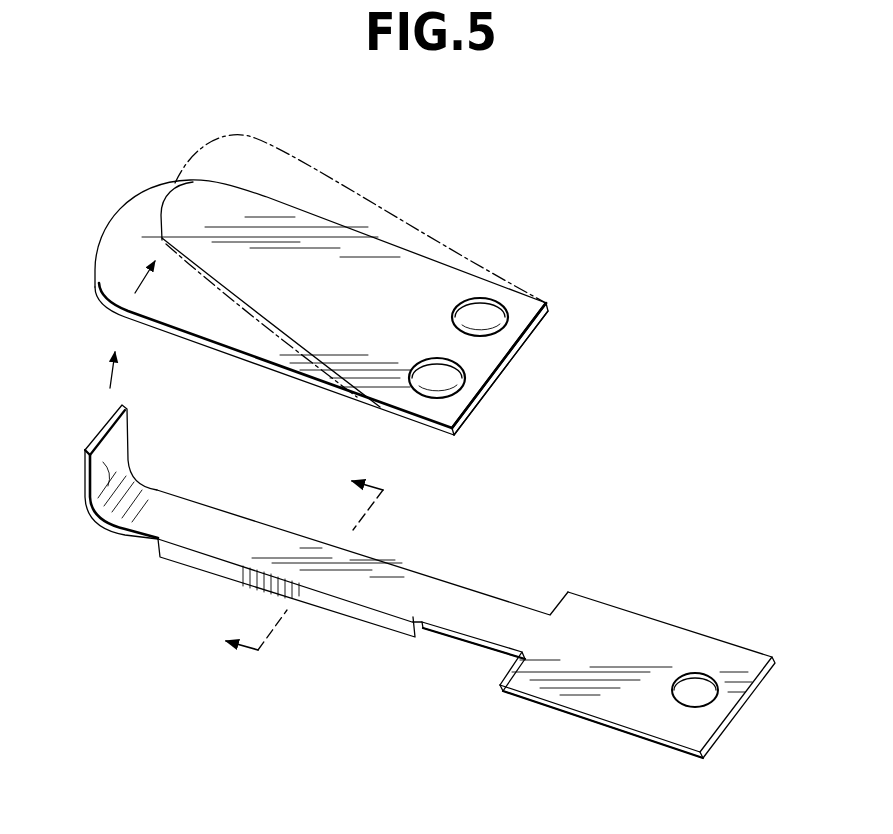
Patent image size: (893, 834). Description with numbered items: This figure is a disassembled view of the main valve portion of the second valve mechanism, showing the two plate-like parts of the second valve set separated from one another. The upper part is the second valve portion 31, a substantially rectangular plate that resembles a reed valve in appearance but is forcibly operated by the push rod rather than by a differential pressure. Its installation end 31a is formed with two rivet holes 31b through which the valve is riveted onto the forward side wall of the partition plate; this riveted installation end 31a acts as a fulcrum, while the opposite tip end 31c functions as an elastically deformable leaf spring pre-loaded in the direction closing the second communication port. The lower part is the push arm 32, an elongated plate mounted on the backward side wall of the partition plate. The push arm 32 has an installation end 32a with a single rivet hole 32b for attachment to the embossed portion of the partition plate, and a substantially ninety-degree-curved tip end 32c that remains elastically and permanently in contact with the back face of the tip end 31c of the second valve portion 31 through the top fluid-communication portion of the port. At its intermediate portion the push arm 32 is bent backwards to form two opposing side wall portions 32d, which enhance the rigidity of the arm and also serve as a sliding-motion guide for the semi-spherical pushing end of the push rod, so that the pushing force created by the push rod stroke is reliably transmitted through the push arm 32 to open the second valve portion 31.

The second valve portion 31 is at (410, 300).
The installation end 31a is at (528, 313).
The rivet holes 31b is at (465, 380).
The tip end 31c is at (140, 220).
The push arm 32 is at (462, 585).
The installation end 32a is at (643, 638).
The rivet hole 32b is at (697, 687).
The curved tip end 32c is at (95, 500).
The side wall portions 32d is at (362, 627).